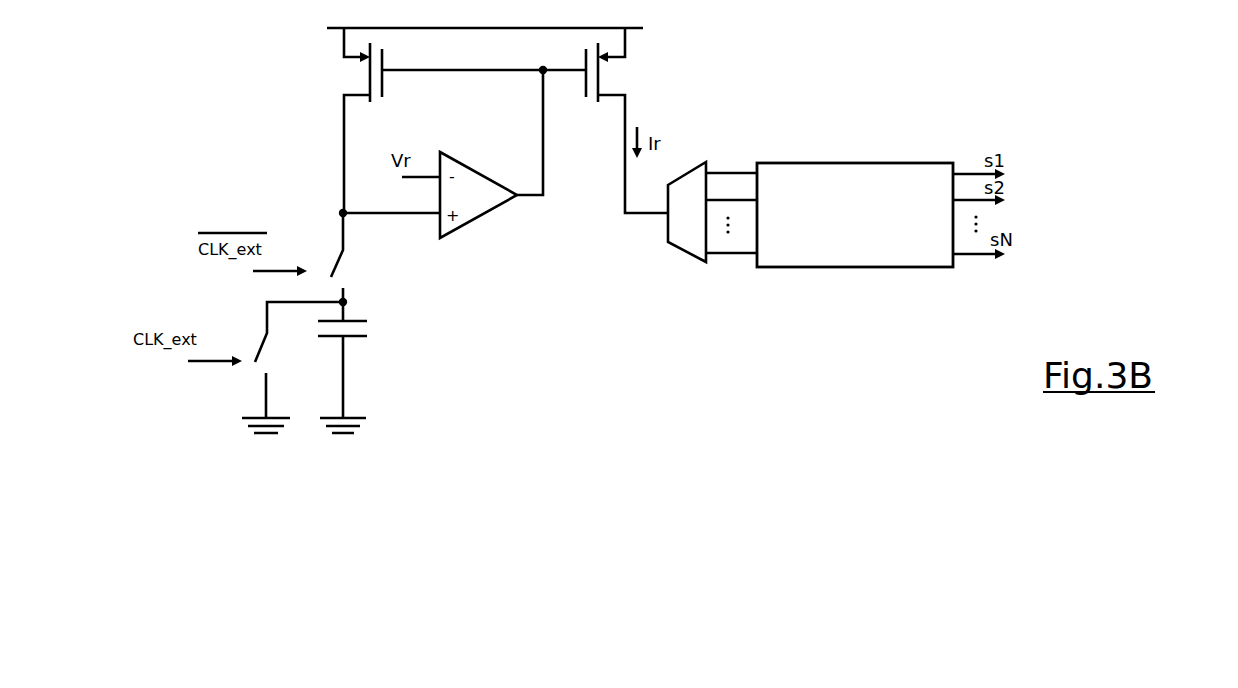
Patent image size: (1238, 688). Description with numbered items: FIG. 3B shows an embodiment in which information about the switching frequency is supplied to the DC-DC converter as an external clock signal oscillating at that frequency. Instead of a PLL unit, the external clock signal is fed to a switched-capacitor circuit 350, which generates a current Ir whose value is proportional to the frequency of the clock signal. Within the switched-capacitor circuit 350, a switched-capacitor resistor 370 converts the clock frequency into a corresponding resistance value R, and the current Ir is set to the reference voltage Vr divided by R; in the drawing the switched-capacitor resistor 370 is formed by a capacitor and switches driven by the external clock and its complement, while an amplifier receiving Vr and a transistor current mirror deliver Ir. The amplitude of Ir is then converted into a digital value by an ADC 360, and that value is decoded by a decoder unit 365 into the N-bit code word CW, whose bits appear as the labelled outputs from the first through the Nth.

The switched-capacitor circuit 350 is at (294, 136).
The ADC 360 is at (685, 250).
The decoder unit 365 is at (830, 161).
The switched-capacitor resistor 370 is at (392, 350).